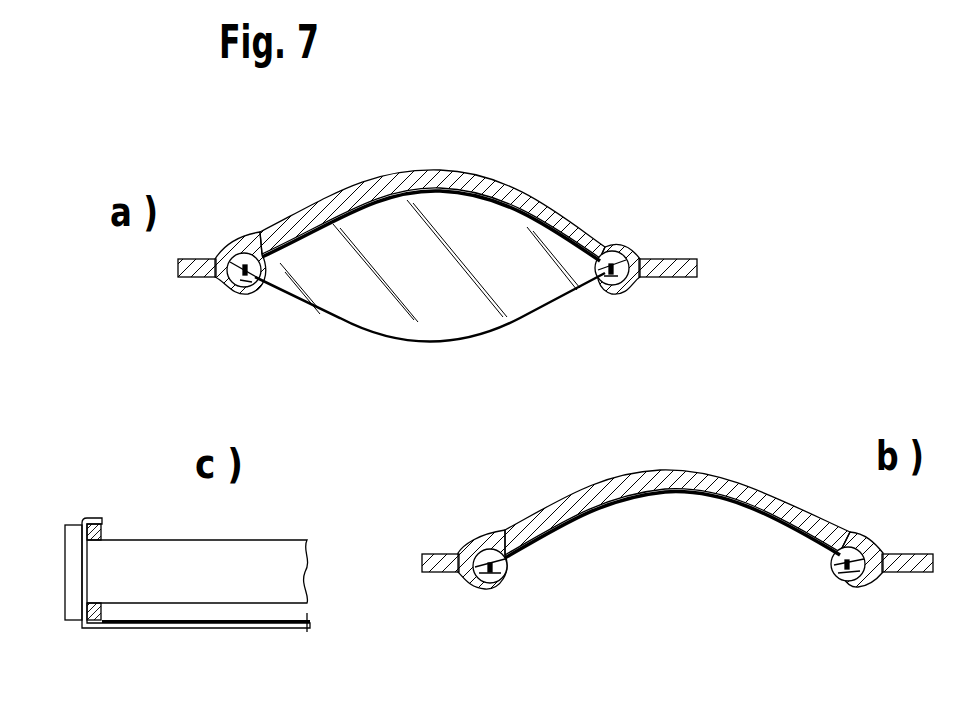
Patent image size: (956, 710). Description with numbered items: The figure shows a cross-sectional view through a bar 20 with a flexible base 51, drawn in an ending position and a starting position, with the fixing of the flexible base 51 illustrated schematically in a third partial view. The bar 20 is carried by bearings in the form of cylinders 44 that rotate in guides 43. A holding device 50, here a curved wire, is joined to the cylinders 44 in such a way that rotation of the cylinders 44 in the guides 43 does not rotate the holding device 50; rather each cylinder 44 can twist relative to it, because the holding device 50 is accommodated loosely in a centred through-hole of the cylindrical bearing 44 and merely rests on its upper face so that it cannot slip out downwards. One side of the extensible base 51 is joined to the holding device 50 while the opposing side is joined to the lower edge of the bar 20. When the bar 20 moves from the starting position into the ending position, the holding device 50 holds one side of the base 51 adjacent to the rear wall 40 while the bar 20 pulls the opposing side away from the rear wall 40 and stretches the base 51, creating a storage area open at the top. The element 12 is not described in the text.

The frame / support bar 12 is at (700, 268).
The bar 20 is at (490, 330).
The rear wall 40 is at (373, 180).
The guide 43 is at (240, 293).
The cylinder 44 is at (250, 260).
The holding device 50 is at (503, 215).
The base 51 is at (443, 235).